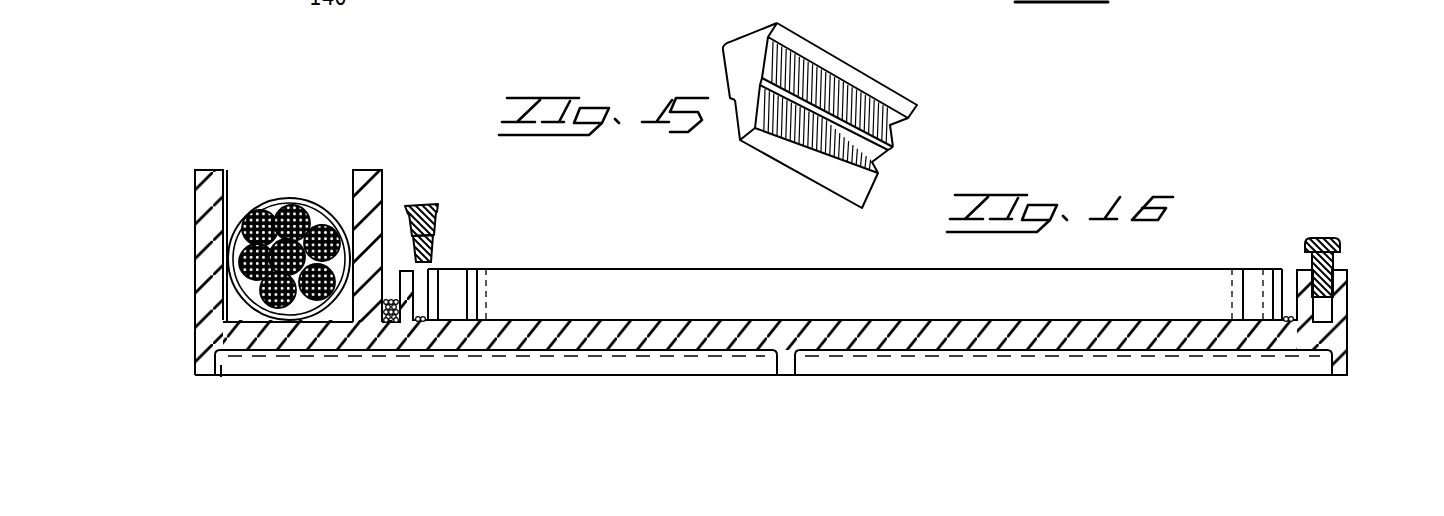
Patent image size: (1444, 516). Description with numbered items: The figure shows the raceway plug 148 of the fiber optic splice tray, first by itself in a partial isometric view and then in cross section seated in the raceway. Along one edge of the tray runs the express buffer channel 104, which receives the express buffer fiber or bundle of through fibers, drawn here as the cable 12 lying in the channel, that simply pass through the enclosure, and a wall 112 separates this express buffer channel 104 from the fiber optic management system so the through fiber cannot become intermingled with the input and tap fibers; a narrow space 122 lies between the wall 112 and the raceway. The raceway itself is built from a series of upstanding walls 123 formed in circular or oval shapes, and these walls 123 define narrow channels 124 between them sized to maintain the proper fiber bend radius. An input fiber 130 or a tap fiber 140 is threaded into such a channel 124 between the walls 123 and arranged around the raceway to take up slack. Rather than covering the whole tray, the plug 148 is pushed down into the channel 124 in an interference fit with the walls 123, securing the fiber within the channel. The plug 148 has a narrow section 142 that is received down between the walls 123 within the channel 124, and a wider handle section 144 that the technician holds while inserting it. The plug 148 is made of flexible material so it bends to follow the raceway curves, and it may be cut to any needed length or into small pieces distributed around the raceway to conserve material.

In FIG. 16, the cable 12 is at (297, 197).
In FIG. 16, the express buffer channel 104 is at (244, 188).
In FIG. 16, the wall 112 is at (388, 283).
In FIG. 16, the gap 122 is at (393, 288).
In FIG. 16, the walls 123 is at (440, 300).
In FIG. 16, the channels 124 is at (432, 300).
In FIG. 16, the input fiber 130 is at (773, 364).
In FIG. 16, the tap fiber 140 is at (773, 379).
In FIG. 16, the narrow section 142 is at (428, 247).
In FIG. 15, the narrow section 142 is at (748, 117).
In FIG. 16, the handle section 144 is at (432, 222).
In FIG. 15, the handle section 144 is at (745, 63).
In FIG. 16, the plug 148 is at (921, 221).
In FIG. 15, the plug 148 is at (803, 119).